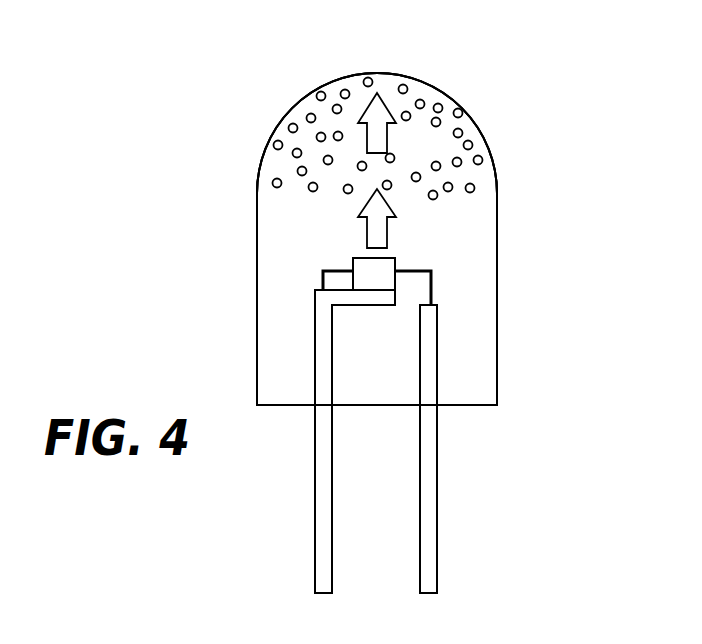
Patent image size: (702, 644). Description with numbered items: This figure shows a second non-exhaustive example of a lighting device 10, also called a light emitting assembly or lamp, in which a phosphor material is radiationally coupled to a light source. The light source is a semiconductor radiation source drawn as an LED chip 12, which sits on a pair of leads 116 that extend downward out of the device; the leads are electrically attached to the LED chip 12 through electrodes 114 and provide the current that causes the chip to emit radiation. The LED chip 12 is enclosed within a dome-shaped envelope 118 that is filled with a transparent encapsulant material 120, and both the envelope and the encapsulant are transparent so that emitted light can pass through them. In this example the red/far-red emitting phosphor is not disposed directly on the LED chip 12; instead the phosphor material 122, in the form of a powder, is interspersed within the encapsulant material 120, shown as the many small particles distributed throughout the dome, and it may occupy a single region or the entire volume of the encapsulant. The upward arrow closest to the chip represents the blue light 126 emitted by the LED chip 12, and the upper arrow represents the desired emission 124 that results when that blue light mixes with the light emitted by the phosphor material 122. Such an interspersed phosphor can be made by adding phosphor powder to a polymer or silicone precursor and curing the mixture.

The lighting device 10 is at (499, 66).
The LED chip 12 is at (375, 277).
The electrodes / bond wires 114 is at (337, 270).
The leads 116 is at (315, 500).
The encapsulant body 118 is at (497, 168).
The encapsulant material 120 is at (275, 277).
The phosphor material 122 is at (416, 182).
The desired emission 124 is at (387, 140).
The blue light 126 is at (367, 233).